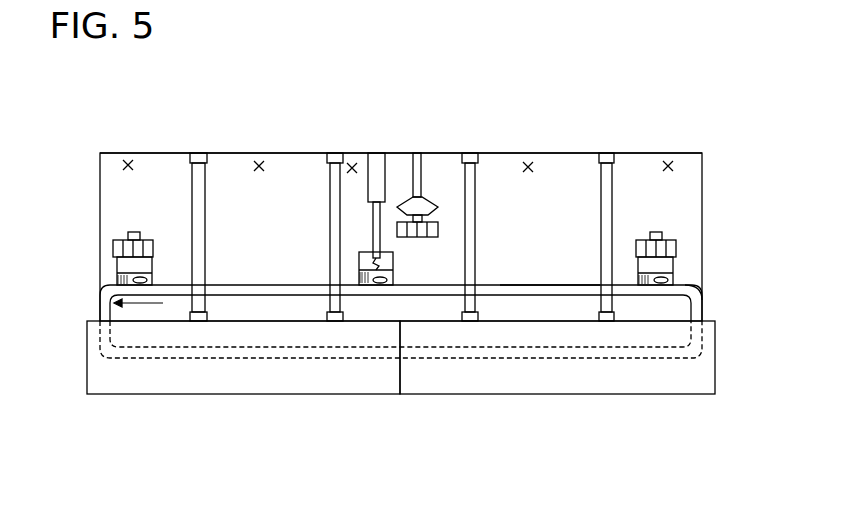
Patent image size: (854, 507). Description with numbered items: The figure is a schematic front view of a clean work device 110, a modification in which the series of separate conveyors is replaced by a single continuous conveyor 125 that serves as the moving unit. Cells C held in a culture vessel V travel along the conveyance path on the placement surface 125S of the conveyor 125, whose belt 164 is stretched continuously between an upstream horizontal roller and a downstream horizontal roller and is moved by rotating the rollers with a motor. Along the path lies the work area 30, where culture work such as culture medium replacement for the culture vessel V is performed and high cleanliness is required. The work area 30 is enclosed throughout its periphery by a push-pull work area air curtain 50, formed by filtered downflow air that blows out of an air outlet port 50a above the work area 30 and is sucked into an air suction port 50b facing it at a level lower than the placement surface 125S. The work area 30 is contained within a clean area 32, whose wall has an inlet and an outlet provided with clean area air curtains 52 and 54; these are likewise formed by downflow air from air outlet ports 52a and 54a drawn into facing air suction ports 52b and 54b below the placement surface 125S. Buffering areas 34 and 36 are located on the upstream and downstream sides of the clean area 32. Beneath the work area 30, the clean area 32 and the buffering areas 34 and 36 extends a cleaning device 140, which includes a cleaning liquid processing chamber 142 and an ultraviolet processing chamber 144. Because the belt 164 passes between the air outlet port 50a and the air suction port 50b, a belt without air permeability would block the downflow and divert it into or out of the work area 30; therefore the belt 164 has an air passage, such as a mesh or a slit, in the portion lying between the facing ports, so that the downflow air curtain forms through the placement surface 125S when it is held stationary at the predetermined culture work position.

The clean work device 110 is at (660, 107).
The work area 30 is at (353, 166).
The clean area 32 is at (259, 162).
The buffering area 34 is at (670, 163).
The buffering area 36 is at (125, 161).
The work area air curtain 50 is at (400, 275).
The air outlet port 50a is at (337, 155).
The air suction port 50b is at (332, 322).
The clean area air curtain 52 is at (634, 276).
The air outlet port 52a is at (607, 155).
The air suction port 52b is at (607, 322).
The clean area air curtain 54 is at (168, 275).
The air outlet port 54a is at (193, 155).
The air suction port 54b is at (197, 322).
The conveyor 125 is at (663, 358).
The placement surface 125S is at (275, 285).
The cleaning device 140 is at (401, 405).
The cleaning liquid processing chamber 142 is at (375, 380).
The ultraviolet processing chamber 144 is at (557, 384).
The belt 164 is at (555, 288).
The cells C is at (668, 270).
The culture vessel V is at (677, 275).